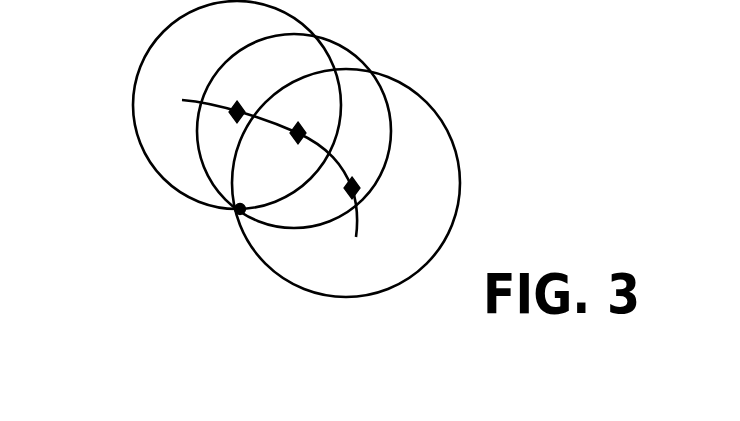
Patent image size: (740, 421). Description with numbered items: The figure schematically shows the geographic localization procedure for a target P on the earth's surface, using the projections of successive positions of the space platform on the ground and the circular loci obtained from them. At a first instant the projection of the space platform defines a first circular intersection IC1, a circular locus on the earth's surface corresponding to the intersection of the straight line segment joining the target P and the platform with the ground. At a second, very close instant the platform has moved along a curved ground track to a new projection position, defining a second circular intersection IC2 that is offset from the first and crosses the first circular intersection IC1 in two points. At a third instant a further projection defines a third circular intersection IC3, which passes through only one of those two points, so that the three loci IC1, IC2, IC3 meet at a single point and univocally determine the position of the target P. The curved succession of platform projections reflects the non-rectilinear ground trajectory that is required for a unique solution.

The first circular intersection IC1 is at (346, 197).
The second circular intersection IC2 is at (294, 122).
The third circular intersection IC3 is at (208, 105).
The target P is at (236, 212).